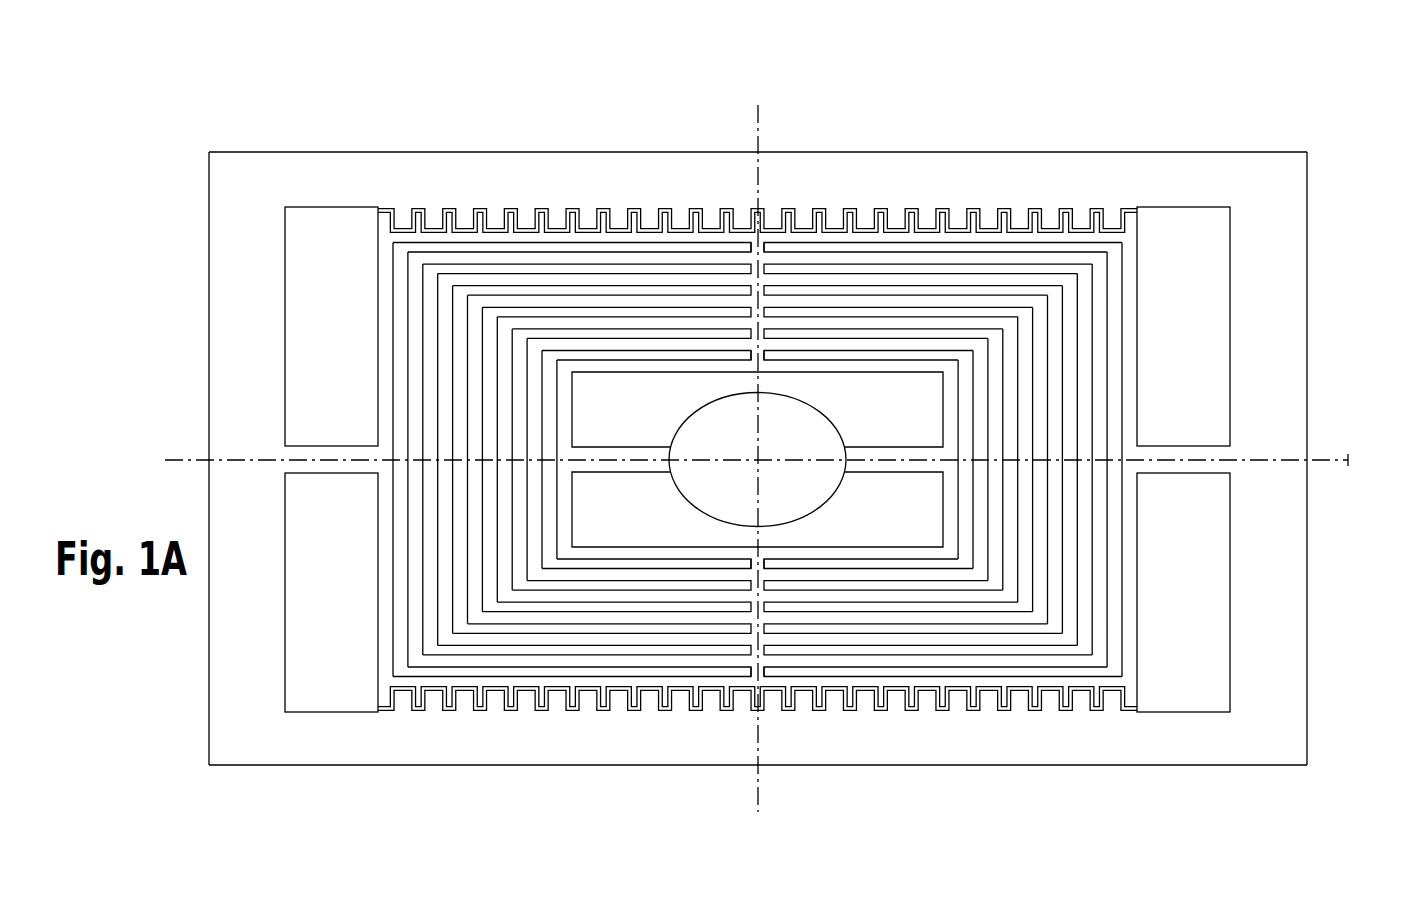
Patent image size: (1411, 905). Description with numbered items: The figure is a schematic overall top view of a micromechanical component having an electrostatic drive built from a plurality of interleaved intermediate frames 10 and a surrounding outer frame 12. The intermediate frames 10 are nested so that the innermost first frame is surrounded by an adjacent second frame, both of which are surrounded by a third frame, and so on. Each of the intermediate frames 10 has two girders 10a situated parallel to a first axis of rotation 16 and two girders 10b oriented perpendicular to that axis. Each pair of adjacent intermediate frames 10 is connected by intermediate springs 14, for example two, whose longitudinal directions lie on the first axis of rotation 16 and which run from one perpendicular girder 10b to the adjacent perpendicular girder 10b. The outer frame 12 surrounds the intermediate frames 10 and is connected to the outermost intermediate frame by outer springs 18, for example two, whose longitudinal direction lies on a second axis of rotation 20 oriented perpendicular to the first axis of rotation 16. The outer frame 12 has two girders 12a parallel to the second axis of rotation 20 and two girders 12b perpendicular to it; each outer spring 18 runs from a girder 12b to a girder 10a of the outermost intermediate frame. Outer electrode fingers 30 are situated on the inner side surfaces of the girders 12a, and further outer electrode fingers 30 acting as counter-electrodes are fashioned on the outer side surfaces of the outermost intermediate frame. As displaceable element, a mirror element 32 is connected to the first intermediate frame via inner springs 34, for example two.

The intermediate frames 10 is at (772, 459).
The girders situated parallel to first axis of rotation 10a is at (533, 378).
The girders oriented perpendicular to first axis of rotation 10b is at (597, 305).
The outer frame 12 is at (768, 449).
The girders situated parallel to second axis of rotation 12a is at (383, 168).
The girders oriented perpendicular to second axis of rotation 12b is at (232, 276).
The intermediate spring 14 is at (762, 313).
The first axis of rotation 16 is at (762, 800).
The outer spring 18 is at (310, 462).
The second axis of rotation 20 is at (1348, 465).
The outer electrode fingers 30 is at (517, 213).
The mirror element 32 is at (728, 414).
The inner spring 34 is at (885, 455).